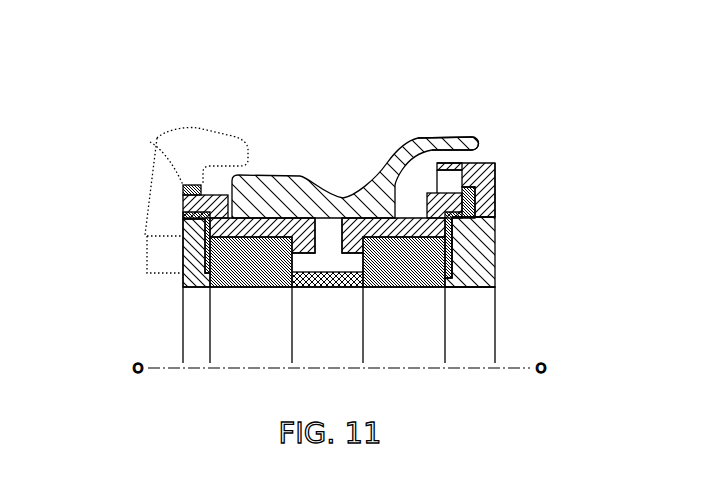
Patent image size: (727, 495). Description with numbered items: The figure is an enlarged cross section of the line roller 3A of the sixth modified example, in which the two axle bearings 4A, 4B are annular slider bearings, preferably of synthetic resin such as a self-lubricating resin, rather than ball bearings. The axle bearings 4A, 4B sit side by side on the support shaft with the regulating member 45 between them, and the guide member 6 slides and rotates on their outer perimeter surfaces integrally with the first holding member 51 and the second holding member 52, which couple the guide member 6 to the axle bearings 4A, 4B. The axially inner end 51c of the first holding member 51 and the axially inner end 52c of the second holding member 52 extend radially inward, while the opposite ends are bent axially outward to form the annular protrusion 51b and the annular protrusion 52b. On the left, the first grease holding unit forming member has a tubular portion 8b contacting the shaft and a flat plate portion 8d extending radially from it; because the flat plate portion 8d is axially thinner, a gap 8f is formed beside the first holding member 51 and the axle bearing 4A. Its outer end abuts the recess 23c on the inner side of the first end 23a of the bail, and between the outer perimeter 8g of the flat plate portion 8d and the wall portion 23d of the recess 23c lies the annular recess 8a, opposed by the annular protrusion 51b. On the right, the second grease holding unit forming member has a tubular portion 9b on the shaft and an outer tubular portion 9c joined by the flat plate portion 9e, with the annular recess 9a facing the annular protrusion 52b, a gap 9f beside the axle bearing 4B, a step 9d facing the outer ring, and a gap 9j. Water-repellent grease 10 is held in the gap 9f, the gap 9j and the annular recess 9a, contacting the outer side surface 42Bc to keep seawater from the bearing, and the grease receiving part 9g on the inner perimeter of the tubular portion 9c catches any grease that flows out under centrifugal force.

The line roller 3A is at (323, 88).
The axle bearing 4A is at (247, 275).
The axle bearing 4B is at (400, 277).
The regulating member 45 is at (322, 288).
The guide member 6 is at (273, 175).
The annular recess 8a is at (182, 206).
The tubular portion 8b is at (183, 287).
The flat plate portion 8d is at (183, 247).
The gap 8f is at (182, 234).
The outer perimeter 8g is at (205, 232).
The annular recess 9a is at (450, 206).
The tubular portion 9b is at (460, 281).
The tubular portion 9c is at (475, 178).
The step 9d is at (463, 237).
The flat plate portion 9e is at (495, 187).
The gap 9f is at (463, 230).
The grease receiving part 9g is at (452, 165).
The gap 9j is at (495, 217).
The water-repellent grease 10 is at (195, 258).
The first end of the bail 23a is at (157, 138).
The recess 23c is at (182, 191).
The wall portion 23d is at (150, 142).
The outer side surface 42Bc is at (451, 265).
The first holding member 51 is at (250, 200).
The annular protrusion 51b is at (207, 190).
The axially inner end 51c is at (307, 240).
The second holding member 52 is at (388, 157).
The annular protrusion 52b is at (415, 140).
The axially inner end 52c is at (348, 240).